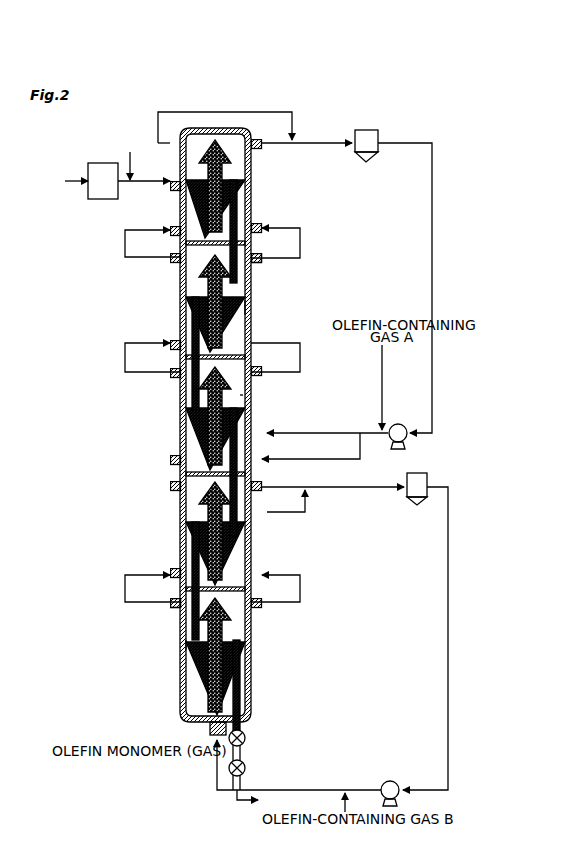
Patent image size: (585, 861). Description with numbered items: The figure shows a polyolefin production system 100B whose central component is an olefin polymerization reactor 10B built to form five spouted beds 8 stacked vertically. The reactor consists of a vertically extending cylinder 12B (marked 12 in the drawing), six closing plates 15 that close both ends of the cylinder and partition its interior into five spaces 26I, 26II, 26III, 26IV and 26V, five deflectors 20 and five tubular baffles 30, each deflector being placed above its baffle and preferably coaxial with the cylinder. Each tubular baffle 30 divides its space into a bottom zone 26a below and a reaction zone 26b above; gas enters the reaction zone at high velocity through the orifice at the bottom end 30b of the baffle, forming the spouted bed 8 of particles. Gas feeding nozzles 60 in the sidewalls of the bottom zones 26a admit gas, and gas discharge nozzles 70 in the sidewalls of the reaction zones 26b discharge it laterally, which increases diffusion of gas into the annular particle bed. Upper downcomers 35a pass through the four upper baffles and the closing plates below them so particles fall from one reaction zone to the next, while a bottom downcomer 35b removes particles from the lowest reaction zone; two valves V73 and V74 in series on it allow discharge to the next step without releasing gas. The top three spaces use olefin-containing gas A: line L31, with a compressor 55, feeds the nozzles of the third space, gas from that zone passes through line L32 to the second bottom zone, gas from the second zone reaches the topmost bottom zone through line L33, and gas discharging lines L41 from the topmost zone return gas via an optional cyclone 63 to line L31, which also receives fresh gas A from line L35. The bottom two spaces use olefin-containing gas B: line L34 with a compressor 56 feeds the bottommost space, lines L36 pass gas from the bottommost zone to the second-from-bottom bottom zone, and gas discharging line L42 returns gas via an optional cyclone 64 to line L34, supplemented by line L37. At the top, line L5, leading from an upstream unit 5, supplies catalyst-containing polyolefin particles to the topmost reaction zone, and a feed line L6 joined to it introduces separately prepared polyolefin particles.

The polyolefin production system 100B is at (505, 125).
The olefin polymerization reactor 10B is at (170, 135).
The tubular baffle 30 is at (245, 215).
The spouted bed 8 is at (186, 197).
The first space 26I is at (240, 160).
The second space 26II is at (246, 290).
The third space 26III is at (330, 396).
The fourth space 26IV is at (246, 513).
The fifth space 26V is at (240, 618).
The bottom zone 26a is at (250, 440).
The reaction zone 26b is at (243, 394).
The upper downcomer 35a is at (237, 230).
The bottom downcomer 35b is at (240, 693).
The deflector 20 is at (200, 160).
The bottom end of tubular baffle 30b is at (175, 243).
The closing plate 15 is at (238, 113).
The gas feeding nozzle 60 is at (262, 222).
The gas discharge nozzle 70 is at (262, 262).
The cylinder portion 12 is at (186, 638).
The cylinder 12B is at (246, 302).
The olefin prepolymerization reactor 5 is at (102, 163).
The line L5 is at (138, 184).
The feed line L6 is at (136, 157).
The line L33 is at (125, 242).
The line L32 is at (125, 354).
The lines L36 is at (125, 590).
The gas discharging line L41 is at (292, 125).
The cyclone 63 is at (378, 136).
The line L31 is at (432, 277).
The line L35 is at (382, 378).
The compressor 55 is at (392, 424).
The gas discharging line L42 is at (378, 488).
The cyclone 64 is at (427, 480).
The line L34 is at (448, 647).
The compressor 56 is at (386, 781).
The line L37 is at (345, 800).
The valve V73 is at (246, 738).
The valve V74 is at (246, 768).